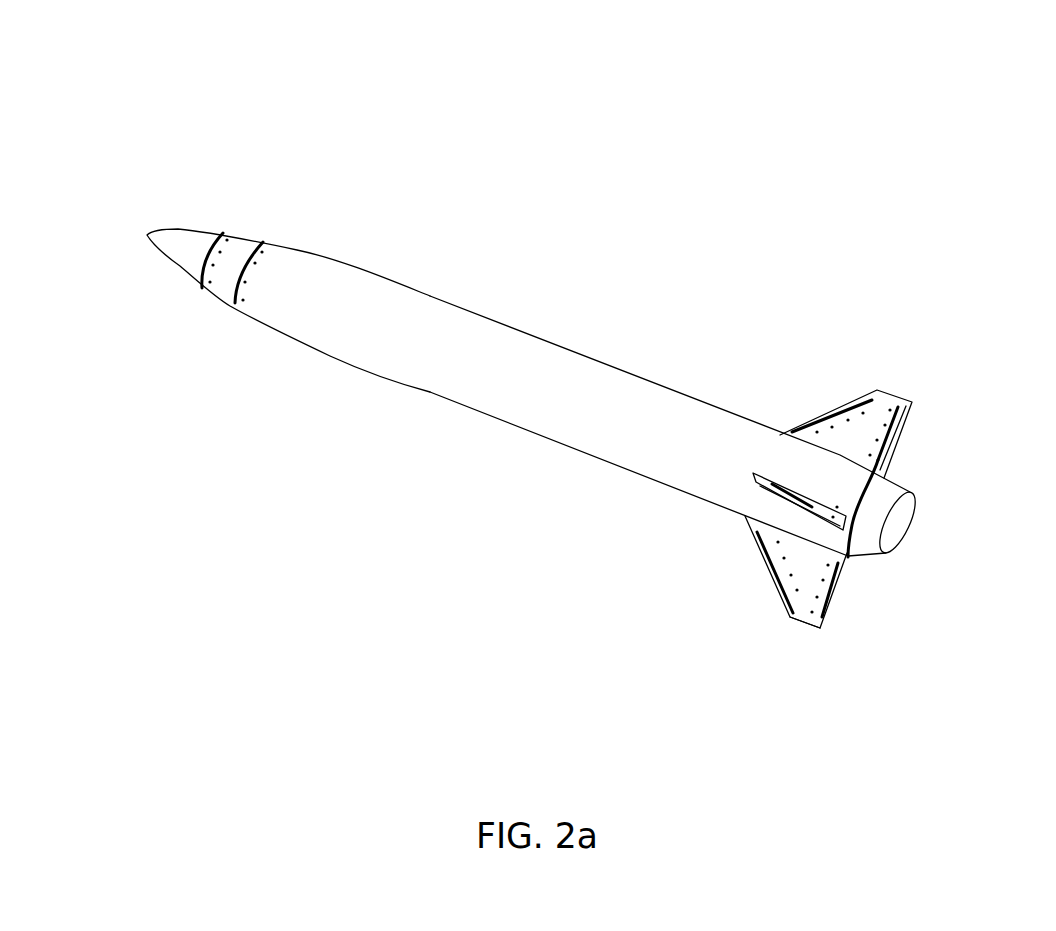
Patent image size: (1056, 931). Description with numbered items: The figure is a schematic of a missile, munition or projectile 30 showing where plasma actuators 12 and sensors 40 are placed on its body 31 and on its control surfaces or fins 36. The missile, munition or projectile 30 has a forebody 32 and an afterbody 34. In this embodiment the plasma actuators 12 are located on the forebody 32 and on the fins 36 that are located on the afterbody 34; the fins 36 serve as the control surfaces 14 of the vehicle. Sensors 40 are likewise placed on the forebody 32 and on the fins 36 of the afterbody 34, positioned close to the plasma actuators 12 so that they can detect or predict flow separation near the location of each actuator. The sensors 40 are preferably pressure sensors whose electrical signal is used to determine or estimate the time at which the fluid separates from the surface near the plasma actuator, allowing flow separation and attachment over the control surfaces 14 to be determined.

The plasma actuator 12 is at (214, 233).
The control surface 14 is at (803, 500).
The missile, munition or projectile 30 is at (550, 372).
The body 31 is at (370, 315).
The forebody 32 is at (282, 280).
The afterbody 34 is at (705, 430).
The fins 36 is at (755, 483).
The sensors 40 is at (210, 297).